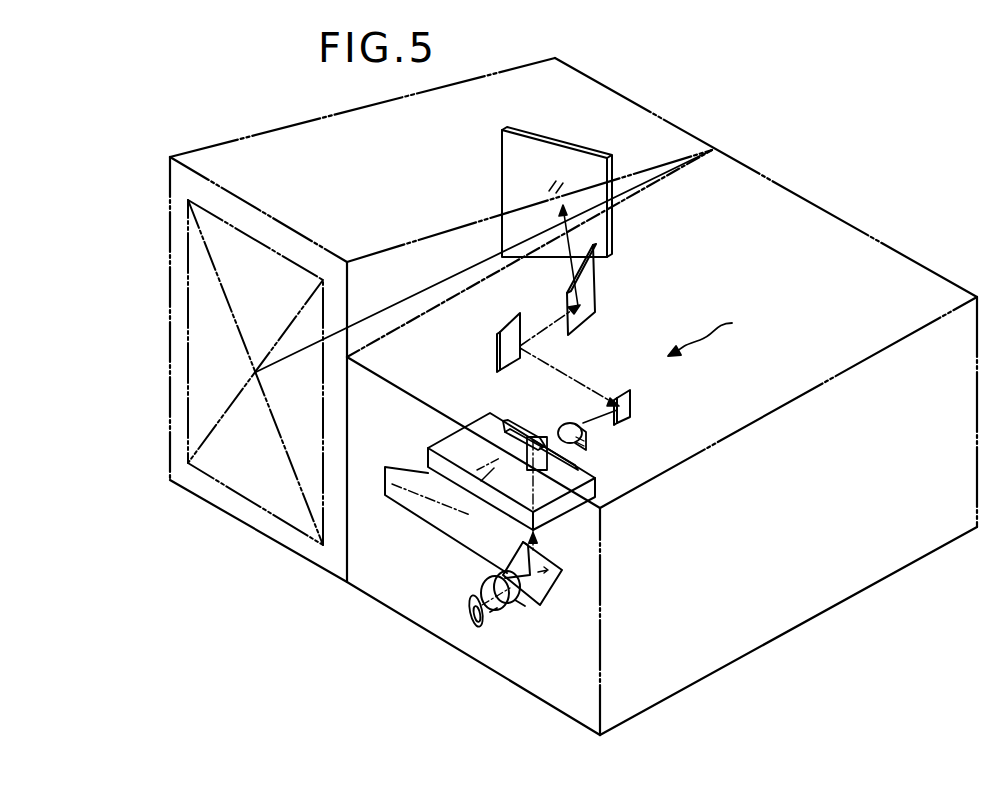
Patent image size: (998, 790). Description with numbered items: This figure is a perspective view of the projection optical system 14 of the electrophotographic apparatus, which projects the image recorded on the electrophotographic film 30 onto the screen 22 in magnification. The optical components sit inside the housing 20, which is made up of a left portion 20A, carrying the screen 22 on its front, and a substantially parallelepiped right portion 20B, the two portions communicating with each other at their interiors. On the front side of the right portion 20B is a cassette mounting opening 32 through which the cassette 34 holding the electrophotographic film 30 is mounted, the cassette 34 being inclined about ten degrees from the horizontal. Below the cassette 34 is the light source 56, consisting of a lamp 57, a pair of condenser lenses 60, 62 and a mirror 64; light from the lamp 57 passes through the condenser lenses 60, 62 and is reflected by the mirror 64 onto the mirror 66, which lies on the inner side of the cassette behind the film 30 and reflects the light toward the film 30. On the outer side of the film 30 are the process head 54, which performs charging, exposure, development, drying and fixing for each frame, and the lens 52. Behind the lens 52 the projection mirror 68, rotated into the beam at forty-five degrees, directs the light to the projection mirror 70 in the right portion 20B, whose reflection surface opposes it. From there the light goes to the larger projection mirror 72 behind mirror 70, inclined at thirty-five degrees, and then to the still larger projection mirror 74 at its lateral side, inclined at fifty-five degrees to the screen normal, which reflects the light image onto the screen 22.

The projection optical system 14 is at (715, 333).
The housing 20 is at (573, 396).
The left portion 20A is at (655, 113).
The right portion 20B is at (735, 158).
The screen 22 is at (233, 463).
The electrophotographic film 30 is at (523, 437).
The cassette mounting opening 32 is at (447, 517).
The cassette 34 is at (440, 467).
The lens 52 is at (586, 440).
The process head 54 is at (573, 468).
The light source 56 is at (523, 610).
The lamp 57 is at (473, 620).
The condenser lens 60 is at (497, 610).
The condenser lens 62 is at (510, 603).
The mirror 64 is at (553, 582).
The mirror 66 is at (528, 437).
The projection mirror 68 is at (630, 402).
The projection mirror 70 is at (500, 347).
The projection mirror 72 is at (600, 303).
The projection mirror 74 is at (557, 180).